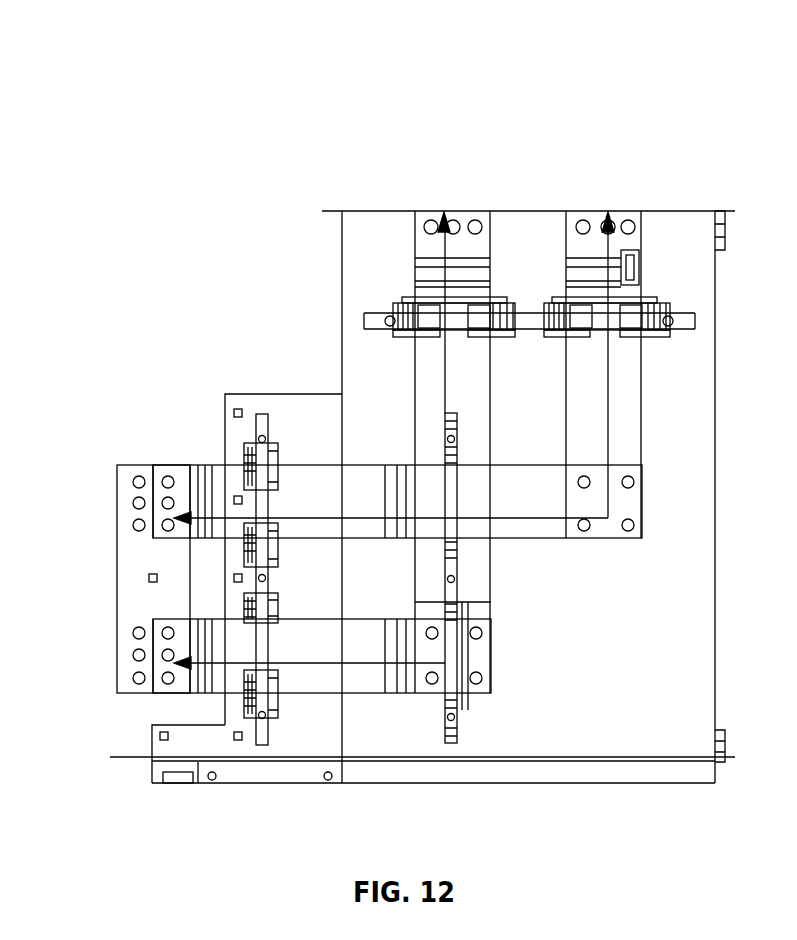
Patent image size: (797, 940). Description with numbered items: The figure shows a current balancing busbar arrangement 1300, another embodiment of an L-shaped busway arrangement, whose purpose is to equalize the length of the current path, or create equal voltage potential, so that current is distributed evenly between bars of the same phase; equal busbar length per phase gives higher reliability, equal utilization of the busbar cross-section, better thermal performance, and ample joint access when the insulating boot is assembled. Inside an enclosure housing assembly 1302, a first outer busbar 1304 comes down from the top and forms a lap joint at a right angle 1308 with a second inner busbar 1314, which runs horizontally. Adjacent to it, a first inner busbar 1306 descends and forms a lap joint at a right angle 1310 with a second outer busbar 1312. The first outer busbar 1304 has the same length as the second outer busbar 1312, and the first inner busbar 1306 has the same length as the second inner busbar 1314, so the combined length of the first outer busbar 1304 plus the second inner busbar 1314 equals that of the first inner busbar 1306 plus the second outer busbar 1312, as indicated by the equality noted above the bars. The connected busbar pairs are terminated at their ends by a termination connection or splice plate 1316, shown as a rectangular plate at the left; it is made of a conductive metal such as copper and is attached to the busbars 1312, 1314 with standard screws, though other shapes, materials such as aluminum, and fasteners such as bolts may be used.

The current balancing busbar arrangement 1300 is at (196, 106).
The enclosure housing assembly 1302 is at (342, 280).
The first outer busbar 1304 is at (632, 218).
The first inner busbar 1306 is at (432, 218).
The lap joint at a right angle 1308 is at (608, 540).
The lap joint at a right angle 1310 is at (495, 668).
The second outer busbar 1312 is at (310, 695).
The second inner busbar 1314 is at (305, 473).
The termination connection (splice plate) 1316 is at (115, 577).